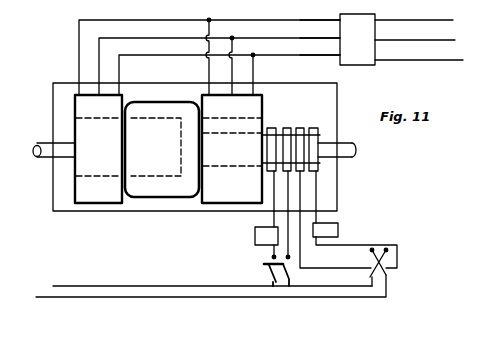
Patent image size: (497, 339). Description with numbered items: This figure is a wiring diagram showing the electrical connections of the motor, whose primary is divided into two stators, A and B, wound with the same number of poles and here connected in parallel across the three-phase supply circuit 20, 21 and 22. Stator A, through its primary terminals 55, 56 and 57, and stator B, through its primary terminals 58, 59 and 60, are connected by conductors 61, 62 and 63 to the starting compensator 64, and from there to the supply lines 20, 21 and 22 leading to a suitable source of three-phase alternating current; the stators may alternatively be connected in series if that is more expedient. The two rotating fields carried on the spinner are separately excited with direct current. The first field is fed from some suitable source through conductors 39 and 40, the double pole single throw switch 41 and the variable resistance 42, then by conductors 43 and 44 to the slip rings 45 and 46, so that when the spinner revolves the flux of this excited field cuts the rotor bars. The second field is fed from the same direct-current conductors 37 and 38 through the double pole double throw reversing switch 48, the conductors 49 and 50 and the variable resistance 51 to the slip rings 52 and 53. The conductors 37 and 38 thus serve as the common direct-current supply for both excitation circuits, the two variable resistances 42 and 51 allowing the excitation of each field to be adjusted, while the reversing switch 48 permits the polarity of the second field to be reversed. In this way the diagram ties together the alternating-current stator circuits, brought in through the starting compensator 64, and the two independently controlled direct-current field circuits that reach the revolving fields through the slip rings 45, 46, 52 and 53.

The supply circuit line 20 is at (404, 19).
The supply circuit line 21 is at (427, 39).
The supply circuit line 22 is at (422, 62).
The conductor 37 is at (224, 286).
The conductor 38 is at (215, 298).
The conductor 39 is at (270, 278).
The conductor 40 is at (293, 276).
The double pole single throw switch 41 is at (262, 263).
The variable resistance 42 is at (255, 239).
The conductor 43 is at (264, 213).
The conductor 44 is at (283, 190).
The slip ring 45 is at (272, 128).
The slip ring 46 is at (286, 128).
The double pole double throw reversing switch 48 is at (387, 272).
The conductor 49 is at (347, 268).
The conductor 50 is at (360, 245).
The variable resistance 51 is at (338, 230).
The slip ring 52 is at (301, 128).
The slip ring 53 is at (314, 128).
The primary terminal of stator A 55 is at (79, 40).
The primary terminal of stator A 56 is at (99, 57).
The primary terminal of stator A 57 is at (119, 75).
The primary terminal of stator B 58 is at (206, 74).
The primary terminal of stator B 59 is at (232, 70).
The primary terminal of stator B 60 is at (255, 60).
The conductor 61 is at (310, 18).
The conductor 62 is at (310, 35).
The conductor 63 is at (310, 53).
The starting compensator 64 is at (357, 39).